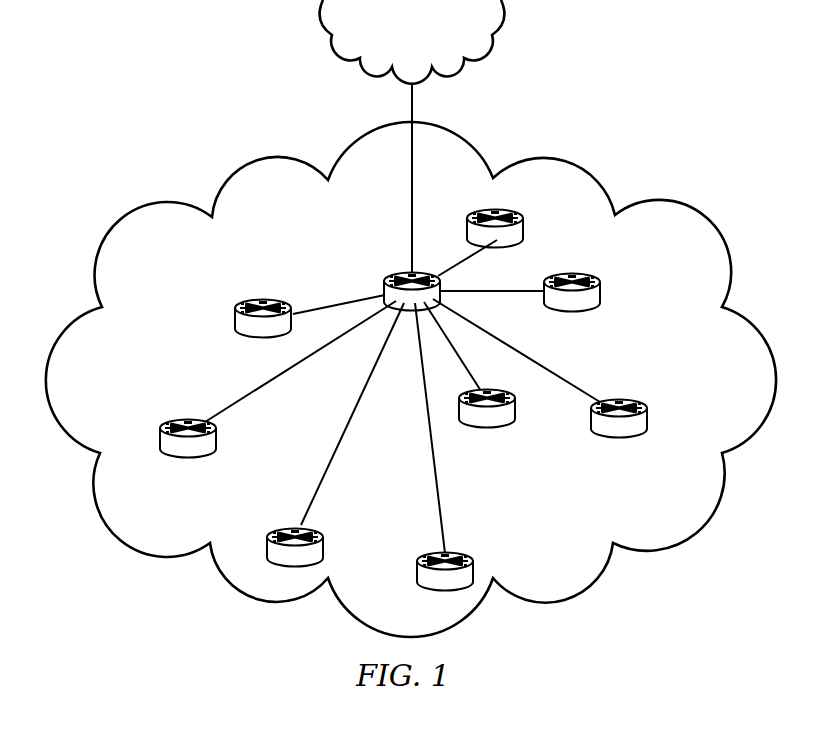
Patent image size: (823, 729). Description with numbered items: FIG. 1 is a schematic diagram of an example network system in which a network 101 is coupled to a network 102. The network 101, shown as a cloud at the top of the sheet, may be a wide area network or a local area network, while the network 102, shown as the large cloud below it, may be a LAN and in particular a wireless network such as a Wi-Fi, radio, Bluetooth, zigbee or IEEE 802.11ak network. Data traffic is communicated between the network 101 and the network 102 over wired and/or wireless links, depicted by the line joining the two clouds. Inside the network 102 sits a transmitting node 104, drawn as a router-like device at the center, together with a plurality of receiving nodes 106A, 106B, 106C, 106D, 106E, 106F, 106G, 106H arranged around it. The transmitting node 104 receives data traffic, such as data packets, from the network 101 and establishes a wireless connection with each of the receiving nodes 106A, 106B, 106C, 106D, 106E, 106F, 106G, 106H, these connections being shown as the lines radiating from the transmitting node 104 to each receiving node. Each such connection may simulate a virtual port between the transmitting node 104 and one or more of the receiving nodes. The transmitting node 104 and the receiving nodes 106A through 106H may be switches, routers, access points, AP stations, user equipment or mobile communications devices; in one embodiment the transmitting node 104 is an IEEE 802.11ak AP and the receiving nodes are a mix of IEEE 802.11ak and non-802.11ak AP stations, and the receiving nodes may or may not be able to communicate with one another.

The network 101 is at (399, 29).
The network 102 is at (398, 615).
The transmitting node 104 is at (395, 273).
The receiving node 106A is at (264, 299).
The receiving node 106B is at (217, 433).
The receiving node 106C is at (323, 541).
The receiving node 106D is at (463, 551).
The receiving node 106E is at (515, 405).
The receiving node 106F is at (648, 412).
The receiving node 106G is at (601, 289).
The receiving node 106H is at (524, 226).